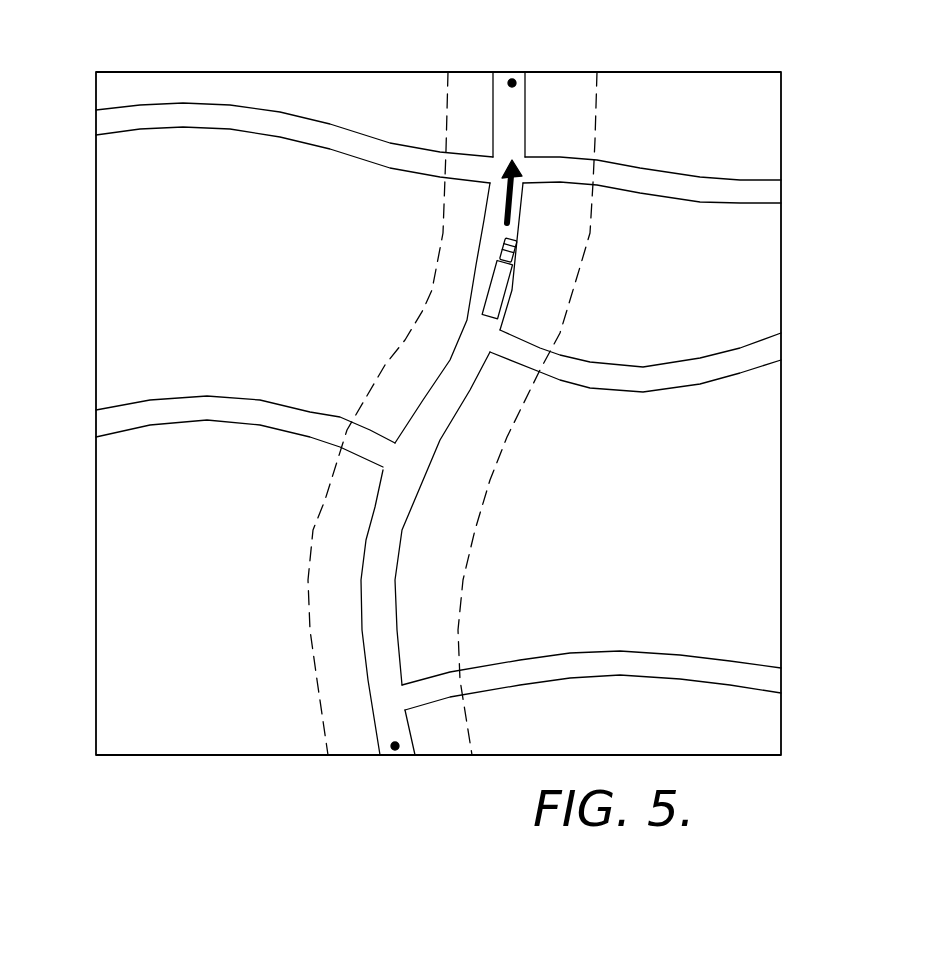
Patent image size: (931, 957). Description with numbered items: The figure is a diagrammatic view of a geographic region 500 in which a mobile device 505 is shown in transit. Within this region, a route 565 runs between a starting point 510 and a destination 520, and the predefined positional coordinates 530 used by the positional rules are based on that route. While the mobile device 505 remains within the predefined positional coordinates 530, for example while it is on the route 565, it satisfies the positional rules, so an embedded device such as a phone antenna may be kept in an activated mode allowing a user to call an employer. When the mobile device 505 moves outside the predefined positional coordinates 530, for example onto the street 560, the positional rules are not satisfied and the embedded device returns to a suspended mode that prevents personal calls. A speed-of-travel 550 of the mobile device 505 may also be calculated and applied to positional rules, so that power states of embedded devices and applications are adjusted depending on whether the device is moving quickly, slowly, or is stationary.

The geographic region 500 is at (257, 72).
The mobile device 505 is at (510, 272).
The starting point 510 is at (397, 751).
The destination 520 is at (510, 78).
The predefined positional coordinates 530 is at (413, 327).
The speed-of-travel 550 is at (505, 212).
The street 560 is at (745, 348).
The route 565 is at (423, 398).